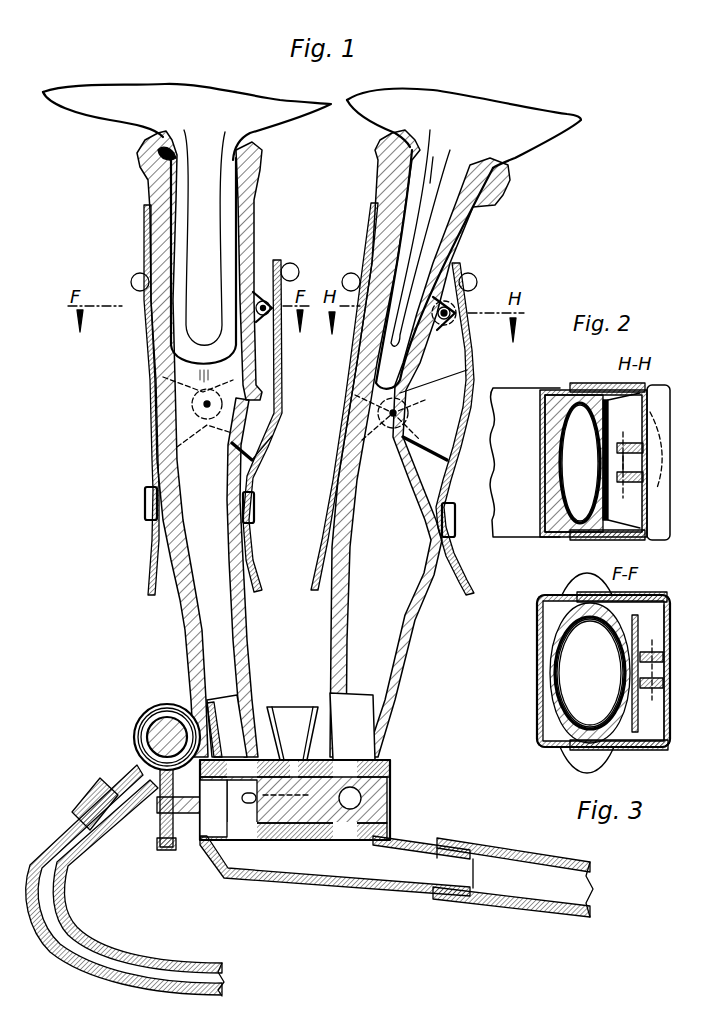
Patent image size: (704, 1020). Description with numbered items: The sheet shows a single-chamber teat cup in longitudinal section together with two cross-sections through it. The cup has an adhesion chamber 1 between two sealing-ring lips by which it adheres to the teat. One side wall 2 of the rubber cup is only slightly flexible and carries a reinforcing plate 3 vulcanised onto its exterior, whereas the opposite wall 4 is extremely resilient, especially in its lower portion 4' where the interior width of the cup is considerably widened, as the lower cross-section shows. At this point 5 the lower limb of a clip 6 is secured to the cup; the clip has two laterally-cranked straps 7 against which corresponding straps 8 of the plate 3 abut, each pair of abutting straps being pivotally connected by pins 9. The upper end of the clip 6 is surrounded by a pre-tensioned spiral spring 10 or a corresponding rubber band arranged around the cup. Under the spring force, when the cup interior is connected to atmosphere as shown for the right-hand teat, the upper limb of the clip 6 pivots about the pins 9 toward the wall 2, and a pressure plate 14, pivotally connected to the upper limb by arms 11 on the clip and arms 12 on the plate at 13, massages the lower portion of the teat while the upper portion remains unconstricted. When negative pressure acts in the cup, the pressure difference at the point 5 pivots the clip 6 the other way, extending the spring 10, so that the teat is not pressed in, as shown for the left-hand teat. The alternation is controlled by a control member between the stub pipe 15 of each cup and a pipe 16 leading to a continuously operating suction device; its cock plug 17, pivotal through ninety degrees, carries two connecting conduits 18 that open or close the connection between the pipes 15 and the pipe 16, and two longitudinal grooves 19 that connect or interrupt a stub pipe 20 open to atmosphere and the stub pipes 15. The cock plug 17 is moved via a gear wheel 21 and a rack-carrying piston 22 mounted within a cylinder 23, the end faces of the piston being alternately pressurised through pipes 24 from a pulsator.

In FIG. 1, the adhesion chamber 1 is at (170, 160).
In FIG. 1, the side wall 2 is at (165, 333).
In FIG. 2, the side wall 2 is at (555, 460).
In FIG. 1, the reinforcing plate 3 is at (152, 370).
In FIG. 2, the reinforcing plate 3 is at (541, 488).
In FIG. 3, the reinforcing plate 3 is at (540, 642).
In FIG. 1, the opposite wall 4 is at (351, 271).
In FIG. 3, the opposite wall 4 is at (593, 673).
In FIG. 1, the lower portion 4' is at (228, 577).
In FIG. 3, the lower portion 4' is at (587, 665).
In FIG. 1, the point 5 is at (256, 510).
In FIG. 1, the clip 6 is at (450, 470).
In FIG. 2, the clip 6 is at (645, 517).
In FIG. 3, the clip 6 is at (664, 710).
In FIG. 1, the laterally-cranked straps 7 is at (262, 440).
In FIG. 3, the laterally-cranked straps 7 is at (634, 752).
In FIG. 1, the straps 8 is at (372, 446).
In FIG. 2, the straps 8 is at (557, 389).
In FIG. 3, the straps 8 is at (563, 750).
In FIG. 1, the pins 9 is at (207, 410).
In FIG. 2, the pins 9 is at (593, 384).
In FIG. 3, the pins 9 is at (592, 590).
In FIG. 1, the spiral spring 10 is at (135, 278).
In FIG. 1, the arms 11 is at (262, 318).
In FIG. 2, the arms 11 is at (630, 443).
In FIG. 1, the arms 12 is at (260, 295).
In FIG. 2, the arms 12 is at (618, 483).
In FIG. 1, the pivot point 13 is at (443, 322).
In FIG. 3, the pivot point 13 is at (653, 665).
In FIG. 1, the pressure plate 14 is at (462, 248).
In FIG. 3, the pressure plate 14 is at (640, 624).
In FIG. 1, the stub pipe 15 is at (247, 702).
In FIG. 1, the pipe 16 is at (455, 868).
In FIG. 1, the cock plug 17 is at (386, 803).
In FIG. 1, the connecting conduits 18 is at (230, 843).
In FIG. 1, the longitudinal grooves 19 is at (272, 843).
In FIG. 1, the stub pipe 20 is at (294, 720).
In FIG. 1, the gear wheel 21 is at (166, 852).
In FIG. 1, the piston 22 is at (147, 737).
In FIG. 1, the cylinder 23 is at (157, 704).
In FIG. 1, the pipes 24 is at (177, 977).